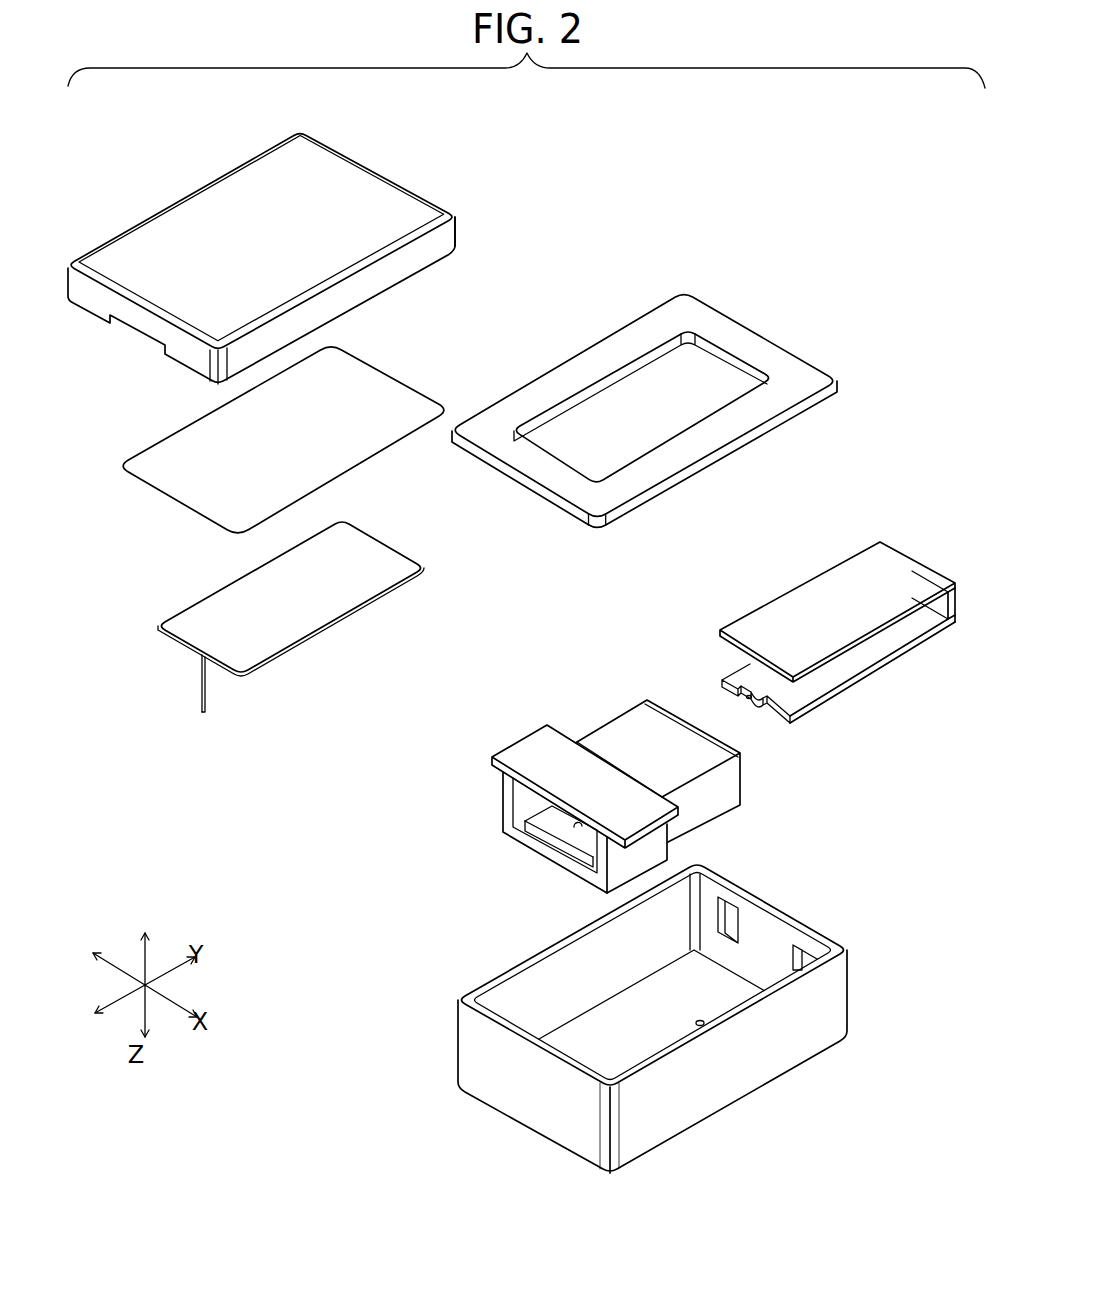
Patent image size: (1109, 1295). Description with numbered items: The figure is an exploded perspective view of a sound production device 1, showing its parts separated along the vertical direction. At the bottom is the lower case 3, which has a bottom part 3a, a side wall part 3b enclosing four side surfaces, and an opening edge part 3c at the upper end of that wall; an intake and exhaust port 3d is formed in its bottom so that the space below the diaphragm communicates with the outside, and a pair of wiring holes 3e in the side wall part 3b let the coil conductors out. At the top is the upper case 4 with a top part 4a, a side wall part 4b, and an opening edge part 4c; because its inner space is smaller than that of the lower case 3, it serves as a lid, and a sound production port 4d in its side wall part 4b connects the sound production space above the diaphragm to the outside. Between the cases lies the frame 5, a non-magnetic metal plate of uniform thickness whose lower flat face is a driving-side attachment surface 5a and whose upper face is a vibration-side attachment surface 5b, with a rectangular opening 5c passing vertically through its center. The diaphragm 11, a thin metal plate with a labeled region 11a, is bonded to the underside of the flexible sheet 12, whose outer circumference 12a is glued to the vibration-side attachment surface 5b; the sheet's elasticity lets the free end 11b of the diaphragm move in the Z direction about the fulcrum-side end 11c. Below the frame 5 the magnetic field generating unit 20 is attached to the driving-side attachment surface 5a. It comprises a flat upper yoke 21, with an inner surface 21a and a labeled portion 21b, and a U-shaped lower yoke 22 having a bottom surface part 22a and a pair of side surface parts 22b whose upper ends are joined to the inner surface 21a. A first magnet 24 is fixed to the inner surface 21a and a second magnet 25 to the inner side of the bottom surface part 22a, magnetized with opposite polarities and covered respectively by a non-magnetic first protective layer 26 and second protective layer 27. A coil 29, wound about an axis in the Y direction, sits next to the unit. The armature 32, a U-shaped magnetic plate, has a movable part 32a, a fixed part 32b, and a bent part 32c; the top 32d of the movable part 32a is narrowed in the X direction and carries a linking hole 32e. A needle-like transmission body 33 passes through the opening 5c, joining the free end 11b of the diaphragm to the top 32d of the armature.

The sound production device 1 is at (613, 206).
The lower case 3 is at (748, 1075).
The bottom part 3a is at (593, 1053).
The side wall part 3b is at (678, 1115).
The opening edge part 3c is at (757, 900).
The intake and exhaust port 3d is at (700, 1023).
The wiring holes 3e is at (797, 947).
The upper case 4 is at (372, 186).
The top part 4a is at (245, 180).
The side wall part 4b is at (415, 262).
The opening edge part 4c is at (440, 257).
The sound production port 4d is at (143, 337).
The frame 5 is at (701, 323).
The driving-side attachment surface 5a is at (649, 508).
The vibration-side attachment surface 5b is at (494, 443).
The opening 5c is at (625, 394).
The diaphragm 11 is at (294, 650).
The plate main surface 11a is at (264, 559).
The free end 11b is at (189, 654).
The fulcrum-side end 11c is at (378, 529).
The flexible sheet 12 is at (361, 389).
The outer circumference 12a is at (158, 438).
The magnetic field generating unit 20 is at (490, 833).
The upper yoke 21 is at (528, 743).
The inner surface 21a is at (580, 825).
The housing rear portion 21b is at (610, 762).
The lower yoke 22 is at (540, 850).
The bottom surface part 22a is at (518, 840).
The side surface parts 22b is at (507, 795).
The first magnet 24 is at (553, 813).
The second magnet 25 is at (587, 862).
The first protective layer 26 is at (510, 813).
The second protective layer 27 is at (573, 838).
The coil 29 is at (733, 792).
The armature 32 is at (842, 546).
The movable part 32a is at (868, 657).
The fixed part 32b is at (793, 598).
The bent part 32c is at (958, 602).
The top 32d is at (748, 700).
The linking hole 32e is at (763, 703).
The transmission body 33 is at (208, 701).